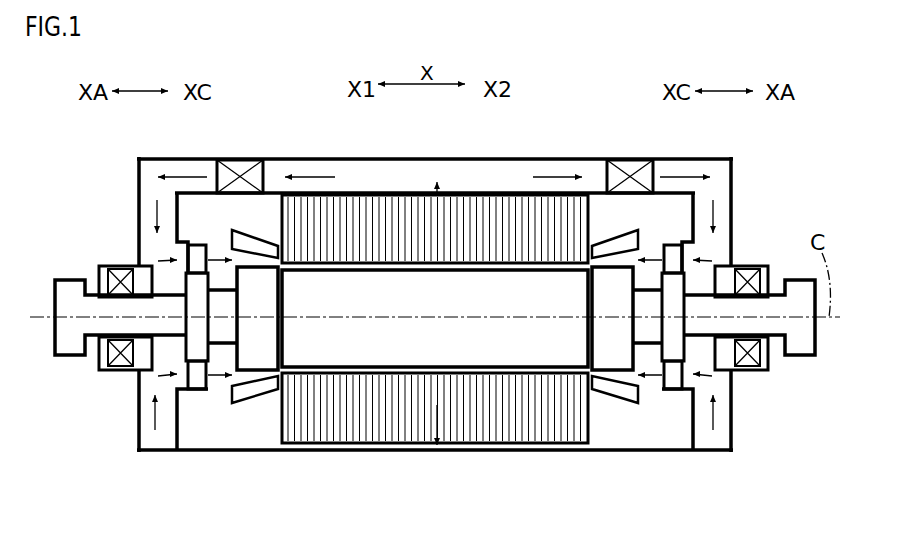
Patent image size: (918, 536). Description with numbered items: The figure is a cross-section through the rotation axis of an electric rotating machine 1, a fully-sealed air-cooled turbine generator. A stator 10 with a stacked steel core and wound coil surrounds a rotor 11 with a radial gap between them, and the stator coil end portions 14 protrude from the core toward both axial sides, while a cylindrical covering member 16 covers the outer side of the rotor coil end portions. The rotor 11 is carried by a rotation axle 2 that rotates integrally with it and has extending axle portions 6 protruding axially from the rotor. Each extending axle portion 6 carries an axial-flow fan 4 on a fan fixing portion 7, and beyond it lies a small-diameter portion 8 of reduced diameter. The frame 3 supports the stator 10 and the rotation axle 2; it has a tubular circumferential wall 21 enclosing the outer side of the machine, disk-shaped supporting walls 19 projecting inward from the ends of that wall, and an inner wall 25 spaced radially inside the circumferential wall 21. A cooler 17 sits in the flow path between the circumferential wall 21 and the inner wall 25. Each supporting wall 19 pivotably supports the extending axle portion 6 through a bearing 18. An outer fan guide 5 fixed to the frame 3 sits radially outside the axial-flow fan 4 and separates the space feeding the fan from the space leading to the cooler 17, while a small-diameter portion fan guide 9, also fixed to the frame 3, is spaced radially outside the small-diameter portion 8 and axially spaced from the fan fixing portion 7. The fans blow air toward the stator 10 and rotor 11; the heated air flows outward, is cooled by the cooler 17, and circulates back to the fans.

The electric rotating machine 1 is at (525, 110).
The rotation axle 2 is at (62, 278).
The frame 3 is at (514, 157).
The axial-flow fan 4 is at (187, 382).
The outer fan guide 5 is at (186, 273).
The extending axle portion 6 is at (436, 238).
The fan fixing portion 7 is at (218, 357).
The small-diameter portion 8 is at (160, 377).
The small-diameter portion fan guide 9 is at (158, 261).
The stator 10 is at (388, 196).
The rotor 11 is at (463, 368).
The stator coil end portion 14 is at (256, 398).
The covering member 16 is at (258, 372).
The cooler 17 is at (245, 163).
The bearing 18 is at (113, 372).
The supporting wall 19 is at (138, 176).
The circumferential wall 21 is at (320, 157).
The inner wall 25 is at (200, 192).